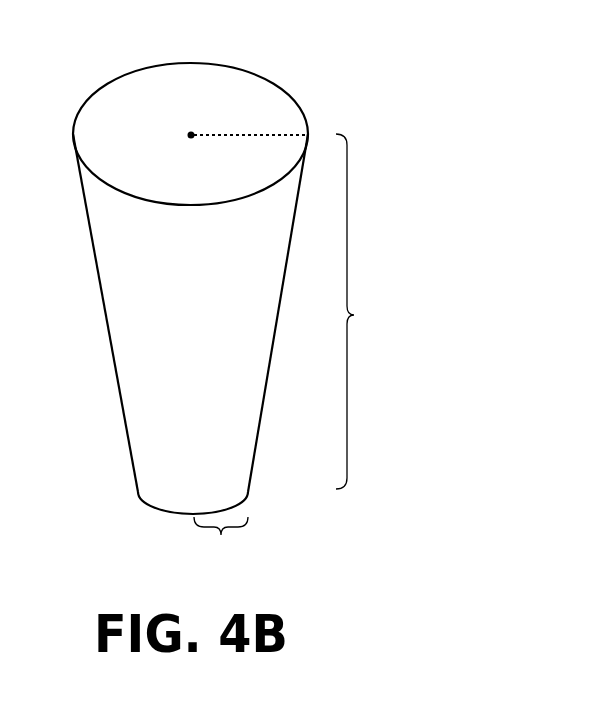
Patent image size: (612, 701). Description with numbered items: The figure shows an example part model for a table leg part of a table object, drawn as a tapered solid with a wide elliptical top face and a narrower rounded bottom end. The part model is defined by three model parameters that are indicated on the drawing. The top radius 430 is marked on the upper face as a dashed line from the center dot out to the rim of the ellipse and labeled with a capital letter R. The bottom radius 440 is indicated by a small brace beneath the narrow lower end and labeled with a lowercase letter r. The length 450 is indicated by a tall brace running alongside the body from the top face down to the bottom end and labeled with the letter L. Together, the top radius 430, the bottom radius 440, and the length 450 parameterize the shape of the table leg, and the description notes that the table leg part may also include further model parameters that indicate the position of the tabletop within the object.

The top radius 430 is at (231, 102).
The bottom radius 440 is at (245, 562).
The length 450 is at (382, 327).